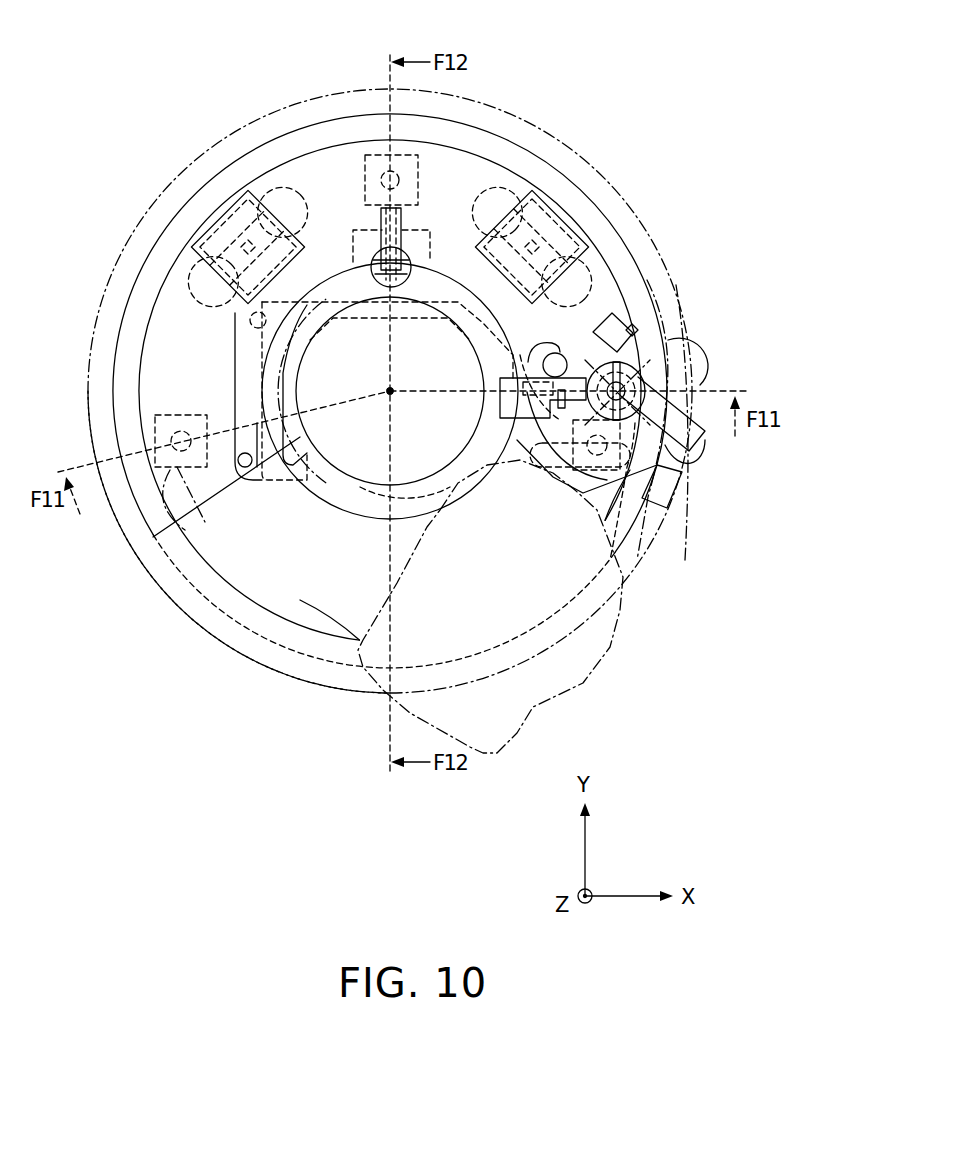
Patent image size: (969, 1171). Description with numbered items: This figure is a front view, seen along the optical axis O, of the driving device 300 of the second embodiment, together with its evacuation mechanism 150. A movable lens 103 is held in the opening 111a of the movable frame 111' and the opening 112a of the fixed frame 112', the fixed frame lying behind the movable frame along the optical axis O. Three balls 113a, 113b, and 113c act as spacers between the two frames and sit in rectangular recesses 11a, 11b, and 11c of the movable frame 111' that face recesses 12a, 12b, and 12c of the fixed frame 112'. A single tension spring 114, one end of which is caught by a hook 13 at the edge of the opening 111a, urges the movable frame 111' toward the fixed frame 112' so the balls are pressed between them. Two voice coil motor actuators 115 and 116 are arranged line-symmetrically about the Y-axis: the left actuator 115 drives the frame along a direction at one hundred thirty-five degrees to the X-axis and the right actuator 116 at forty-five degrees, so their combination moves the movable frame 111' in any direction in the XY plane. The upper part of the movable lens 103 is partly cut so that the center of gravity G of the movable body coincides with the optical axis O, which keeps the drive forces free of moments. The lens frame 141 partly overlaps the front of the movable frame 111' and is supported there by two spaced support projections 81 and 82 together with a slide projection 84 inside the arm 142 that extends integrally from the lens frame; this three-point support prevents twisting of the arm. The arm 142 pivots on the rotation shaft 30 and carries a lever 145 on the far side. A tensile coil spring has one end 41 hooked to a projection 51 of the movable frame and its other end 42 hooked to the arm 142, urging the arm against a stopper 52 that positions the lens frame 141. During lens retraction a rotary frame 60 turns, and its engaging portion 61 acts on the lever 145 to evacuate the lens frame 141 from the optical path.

The driving device 300 is at (331, 72).
The evacuation mechanism 150 is at (712, 296).
The rotary frame 60 is at (272, 670).
The X-axis actuator 115 is at (210, 204).
The Y-axis actuator 116 is at (572, 203).
The movable frame 111' is at (419, 358).
The fixed frame 112' is at (578, 309).
The movable lens 103 is at (360, 484).
The opening of movable frame 111a is at (387, 383).
The opening of fixed frame 112a is at (328, 268).
The lens frame 141 is at (305, 483).
The support projection 81 is at (250, 322).
The support projection 82 is at (245, 470).
The hook 13 is at (383, 248).
The tension spring 114 is at (406, 272).
The ball 113a is at (420, 184).
The ball 113b is at (585, 478).
The ball 113c is at (181, 430).
The recess 11a is at (264, 246).
The recess 12a is at (362, 190).
The recess 11b is at (543, 456).
The recess 12b is at (556, 486).
The recess 11c is at (226, 495).
The recess 12c is at (226, 495).
The other end of tensile coil spring 42 is at (500, 398).
The slide projection 84 is at (541, 345).
The stopper 52 is at (566, 347).
The arm 142 is at (600, 324).
The projection 51 is at (634, 322).
The rotation shaft 30 is at (650, 348).
The one end of tensile coil spring 41 is at (652, 292).
The lever 145 is at (705, 440).
The engaging portion 61 is at (676, 480).
The optical axis O is at (412, 371).
The center of gravity G is at (394, 386).